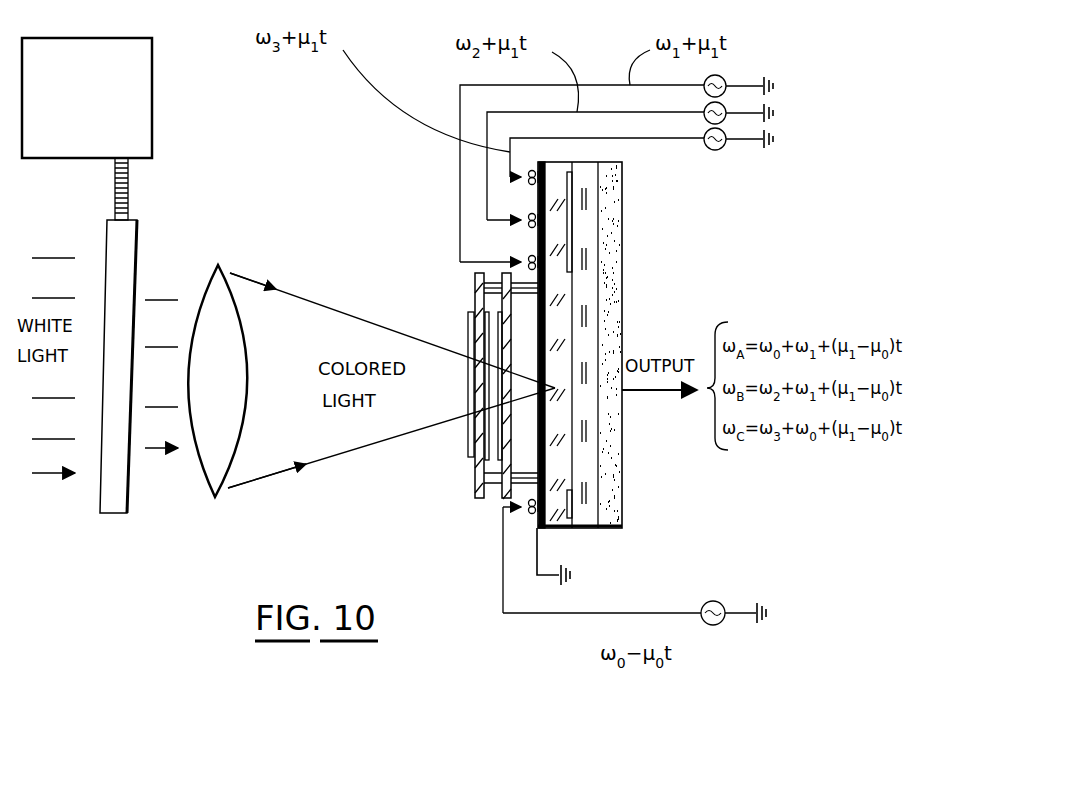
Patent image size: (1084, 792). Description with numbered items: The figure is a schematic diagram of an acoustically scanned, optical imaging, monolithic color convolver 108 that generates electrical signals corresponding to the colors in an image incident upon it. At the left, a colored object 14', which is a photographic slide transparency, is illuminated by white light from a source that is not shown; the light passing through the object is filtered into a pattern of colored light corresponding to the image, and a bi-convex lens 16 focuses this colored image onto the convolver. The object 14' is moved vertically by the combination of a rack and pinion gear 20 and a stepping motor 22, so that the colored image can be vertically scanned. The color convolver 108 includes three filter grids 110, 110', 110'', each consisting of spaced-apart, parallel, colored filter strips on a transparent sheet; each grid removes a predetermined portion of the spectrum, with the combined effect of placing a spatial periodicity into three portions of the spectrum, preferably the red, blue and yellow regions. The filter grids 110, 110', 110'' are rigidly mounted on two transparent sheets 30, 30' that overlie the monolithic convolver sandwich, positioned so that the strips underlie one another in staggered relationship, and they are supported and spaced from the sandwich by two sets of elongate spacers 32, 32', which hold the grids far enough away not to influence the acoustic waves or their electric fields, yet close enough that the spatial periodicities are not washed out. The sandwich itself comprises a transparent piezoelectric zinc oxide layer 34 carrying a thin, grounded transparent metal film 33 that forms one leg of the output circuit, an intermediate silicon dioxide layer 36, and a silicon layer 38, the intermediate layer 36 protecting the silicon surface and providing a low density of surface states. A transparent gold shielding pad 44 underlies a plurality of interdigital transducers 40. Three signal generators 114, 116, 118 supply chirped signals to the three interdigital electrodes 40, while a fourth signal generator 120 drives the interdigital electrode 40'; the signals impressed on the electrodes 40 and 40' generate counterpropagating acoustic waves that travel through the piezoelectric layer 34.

The stepping motor 22 is at (87, 98).
The rack and pinion gear 20 is at (79, 174).
The colored object 14' is at (148, 404).
The bi-convex lens 16 is at (212, 460).
The color convolver 108 is at (400, 225).
The transparent sheet 30 is at (441, 385).
The transparent sheet 30' is at (454, 373).
The elongate spacers 32 is at (450, 303).
The elongate spacers 32' is at (524, 310).
The transparent metal film 33 is at (540, 368).
The filter grid 110 is at (438, 413).
The filter grid 110' is at (458, 426).
The filter grid 110'' is at (472, 445).
The piezoelectric layer 34 is at (562, 432).
The intermediate layer 36 is at (584, 474).
The silicon layer 38 is at (608, 510).
The interdigital transducers 40 is at (514, 220).
The interdigital electrode 40' is at (522, 534).
The transparent gold shielding pad 44 is at (572, 232).
The signal generator 114 is at (704, 92).
The signal generator 116 is at (704, 119).
The signal generator 118 is at (710, 151).
The fourth signal generator 120 is at (723, 605).